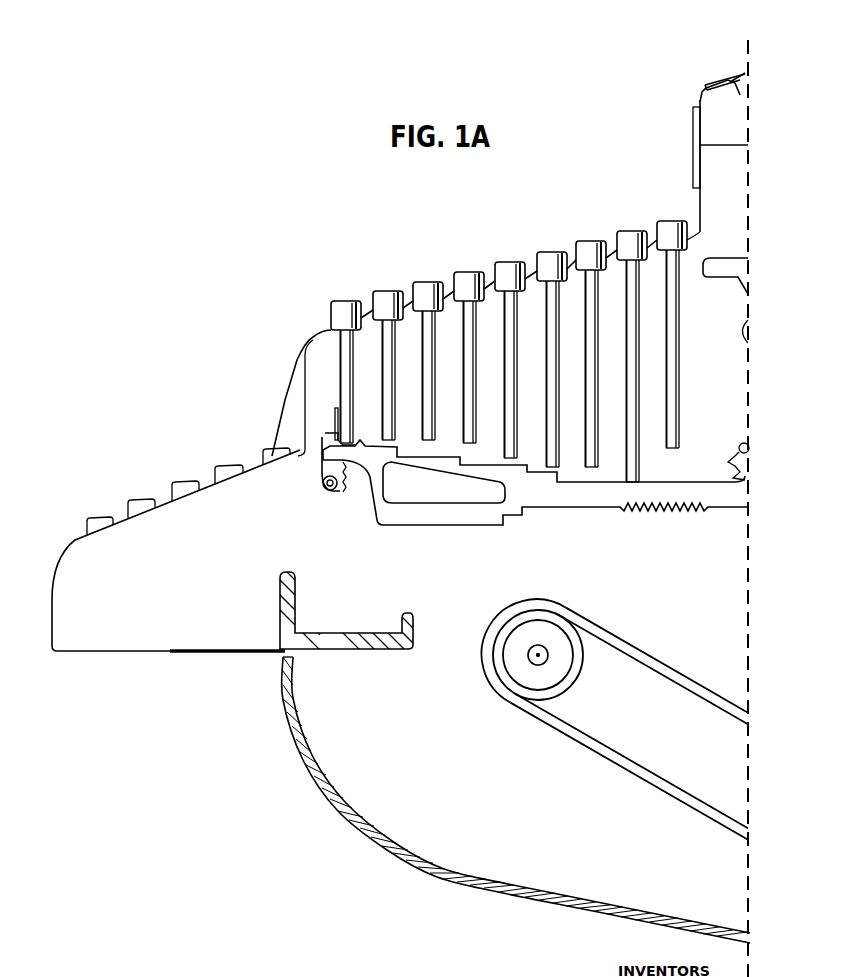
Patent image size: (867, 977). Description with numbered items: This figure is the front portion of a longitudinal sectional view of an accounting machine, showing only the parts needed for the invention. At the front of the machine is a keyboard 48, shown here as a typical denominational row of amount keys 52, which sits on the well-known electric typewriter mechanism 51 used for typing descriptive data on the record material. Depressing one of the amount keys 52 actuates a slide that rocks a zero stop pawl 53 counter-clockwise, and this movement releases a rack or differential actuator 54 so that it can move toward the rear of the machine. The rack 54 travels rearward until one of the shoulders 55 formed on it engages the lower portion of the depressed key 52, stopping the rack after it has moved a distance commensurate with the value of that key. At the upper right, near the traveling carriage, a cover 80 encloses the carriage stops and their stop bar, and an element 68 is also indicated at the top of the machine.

The keyboard 48 is at (509, 351).
The electric typewriter mechanism 51 is at (76, 546).
The amount keys 52 is at (373, 302).
The zero stop pawl 53 is at (340, 494).
The rack or differential actuator 54 is at (455, 527).
The shoulders 55 is at (433, 457).
The lever arm 68 is at (735, 76).
The cover 80 is at (745, 73).